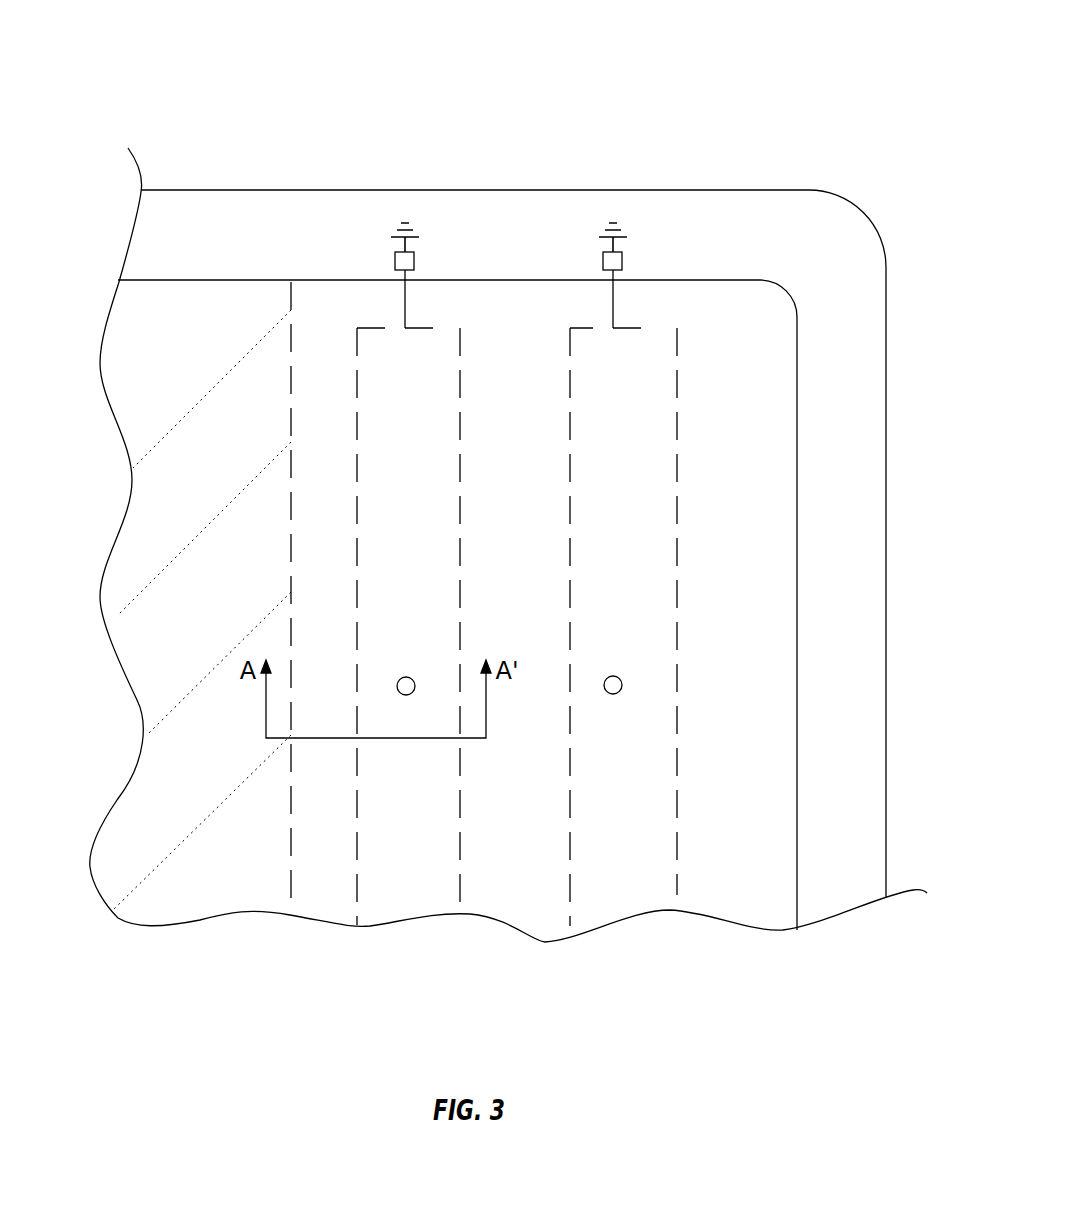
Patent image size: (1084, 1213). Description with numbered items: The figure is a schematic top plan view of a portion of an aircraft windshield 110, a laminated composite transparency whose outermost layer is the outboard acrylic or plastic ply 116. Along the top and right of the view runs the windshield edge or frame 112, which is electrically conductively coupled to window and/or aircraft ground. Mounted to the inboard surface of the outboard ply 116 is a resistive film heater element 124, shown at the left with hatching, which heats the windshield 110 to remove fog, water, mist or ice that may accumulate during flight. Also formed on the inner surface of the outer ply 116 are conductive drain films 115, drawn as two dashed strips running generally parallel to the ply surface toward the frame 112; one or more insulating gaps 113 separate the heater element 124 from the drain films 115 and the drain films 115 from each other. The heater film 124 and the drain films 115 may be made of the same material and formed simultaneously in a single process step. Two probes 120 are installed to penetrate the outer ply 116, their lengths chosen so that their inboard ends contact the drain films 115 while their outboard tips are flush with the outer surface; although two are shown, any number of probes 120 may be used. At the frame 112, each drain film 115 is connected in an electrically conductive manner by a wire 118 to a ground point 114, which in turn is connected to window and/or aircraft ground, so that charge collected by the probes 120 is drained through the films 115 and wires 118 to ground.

The windshield 110 is at (790, 76).
The windshield edge or frame 112 is at (252, 222).
The insulating gaps 113 is at (323, 902).
The ground points 114 is at (414, 260).
The conductive drain films 115 is at (415, 898).
The outboard acrylic or plastic ply 116 is at (165, 496).
The wires 118 is at (405, 305).
The probes 120 is at (397, 690).
The resistive film heater element 124 is at (178, 887).